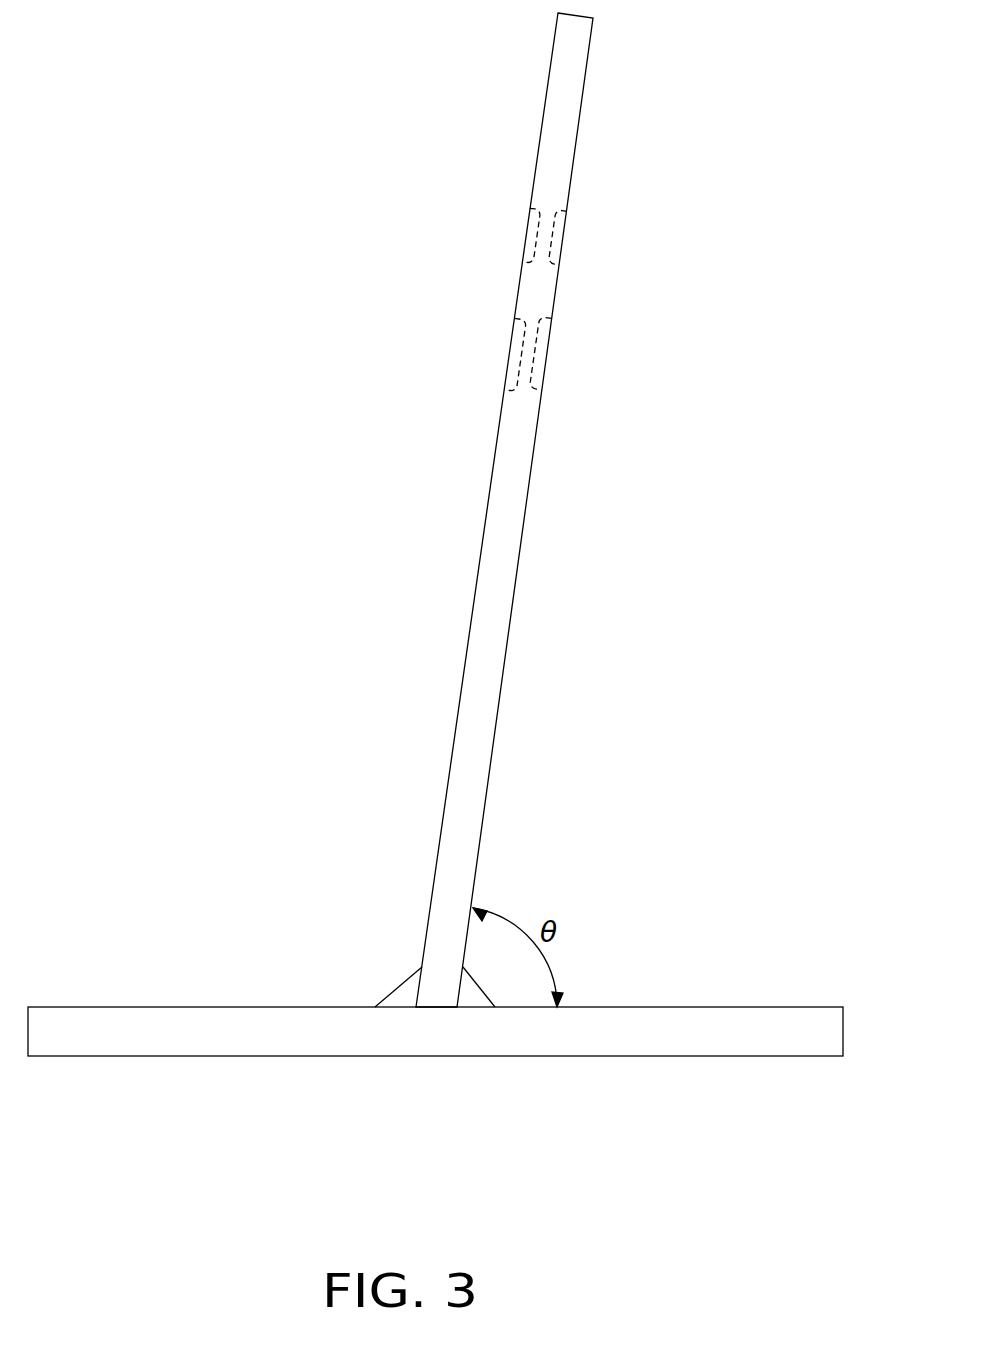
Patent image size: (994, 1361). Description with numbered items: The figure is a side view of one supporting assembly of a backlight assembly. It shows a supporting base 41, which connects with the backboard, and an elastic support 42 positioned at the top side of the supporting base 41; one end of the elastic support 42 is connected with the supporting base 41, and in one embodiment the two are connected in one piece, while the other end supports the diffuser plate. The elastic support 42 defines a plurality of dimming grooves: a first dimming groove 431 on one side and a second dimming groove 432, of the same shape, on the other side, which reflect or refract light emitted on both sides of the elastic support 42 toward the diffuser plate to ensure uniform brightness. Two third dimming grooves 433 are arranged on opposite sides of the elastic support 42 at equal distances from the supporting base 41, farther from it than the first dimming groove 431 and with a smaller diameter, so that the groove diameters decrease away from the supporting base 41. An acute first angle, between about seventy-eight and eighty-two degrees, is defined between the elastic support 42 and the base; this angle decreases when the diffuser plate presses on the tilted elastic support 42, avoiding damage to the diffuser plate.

The supporting base 41 is at (210, 1030).
The elastic support 42 is at (452, 835).
The first dimming groove 431 is at (545, 363).
The second dimming groove 432 is at (488, 350).
The third dimming groove 433 is at (565, 241).